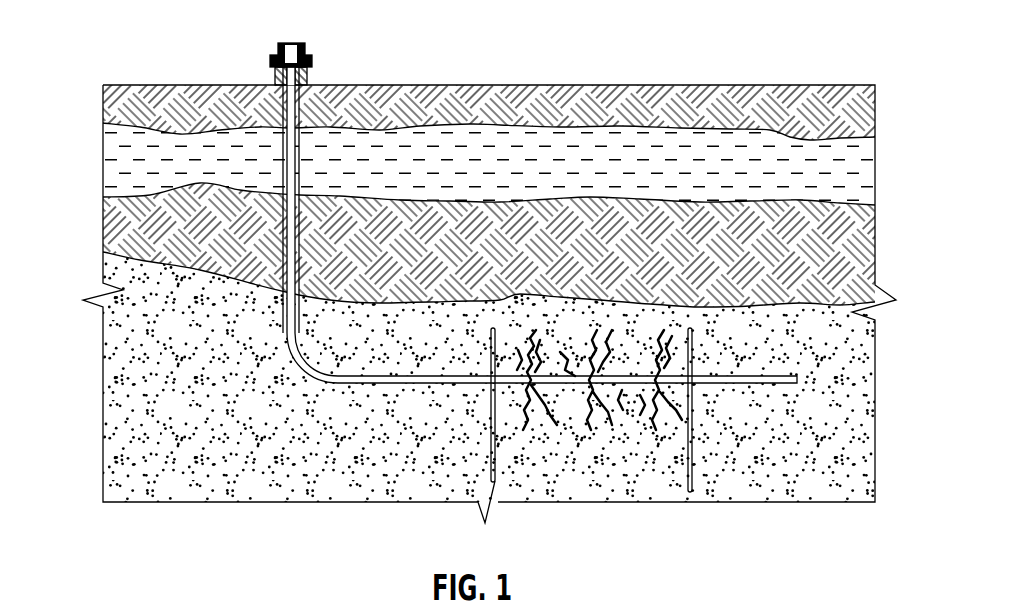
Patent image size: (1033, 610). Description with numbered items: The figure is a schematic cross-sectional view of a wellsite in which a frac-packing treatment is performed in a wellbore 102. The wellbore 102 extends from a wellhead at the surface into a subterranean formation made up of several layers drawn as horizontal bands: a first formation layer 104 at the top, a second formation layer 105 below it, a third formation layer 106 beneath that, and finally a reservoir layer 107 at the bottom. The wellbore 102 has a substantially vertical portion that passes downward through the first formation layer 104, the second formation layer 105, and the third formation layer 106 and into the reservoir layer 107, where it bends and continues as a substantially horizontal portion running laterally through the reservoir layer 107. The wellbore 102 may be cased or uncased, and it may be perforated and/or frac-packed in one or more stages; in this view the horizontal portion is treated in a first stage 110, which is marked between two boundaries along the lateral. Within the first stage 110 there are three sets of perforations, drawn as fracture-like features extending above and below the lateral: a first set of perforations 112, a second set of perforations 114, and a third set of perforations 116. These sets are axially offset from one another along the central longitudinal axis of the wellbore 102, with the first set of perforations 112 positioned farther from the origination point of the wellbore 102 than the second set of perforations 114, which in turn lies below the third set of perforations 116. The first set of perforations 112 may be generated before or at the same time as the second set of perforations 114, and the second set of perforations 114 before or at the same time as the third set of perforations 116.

The wellbore 102 is at (286, 38).
The first formation layer 104 is at (103, 97).
The second formation layer 105 is at (118, 168).
The third formation layer 106 is at (112, 230).
The reservoir layer 107 is at (116, 402).
The first stage 110 is at (621, 484).
The first set of perforations 112 is at (665, 348).
The second set of perforations 114 is at (617, 348).
The third set of perforations 116 is at (540, 348).